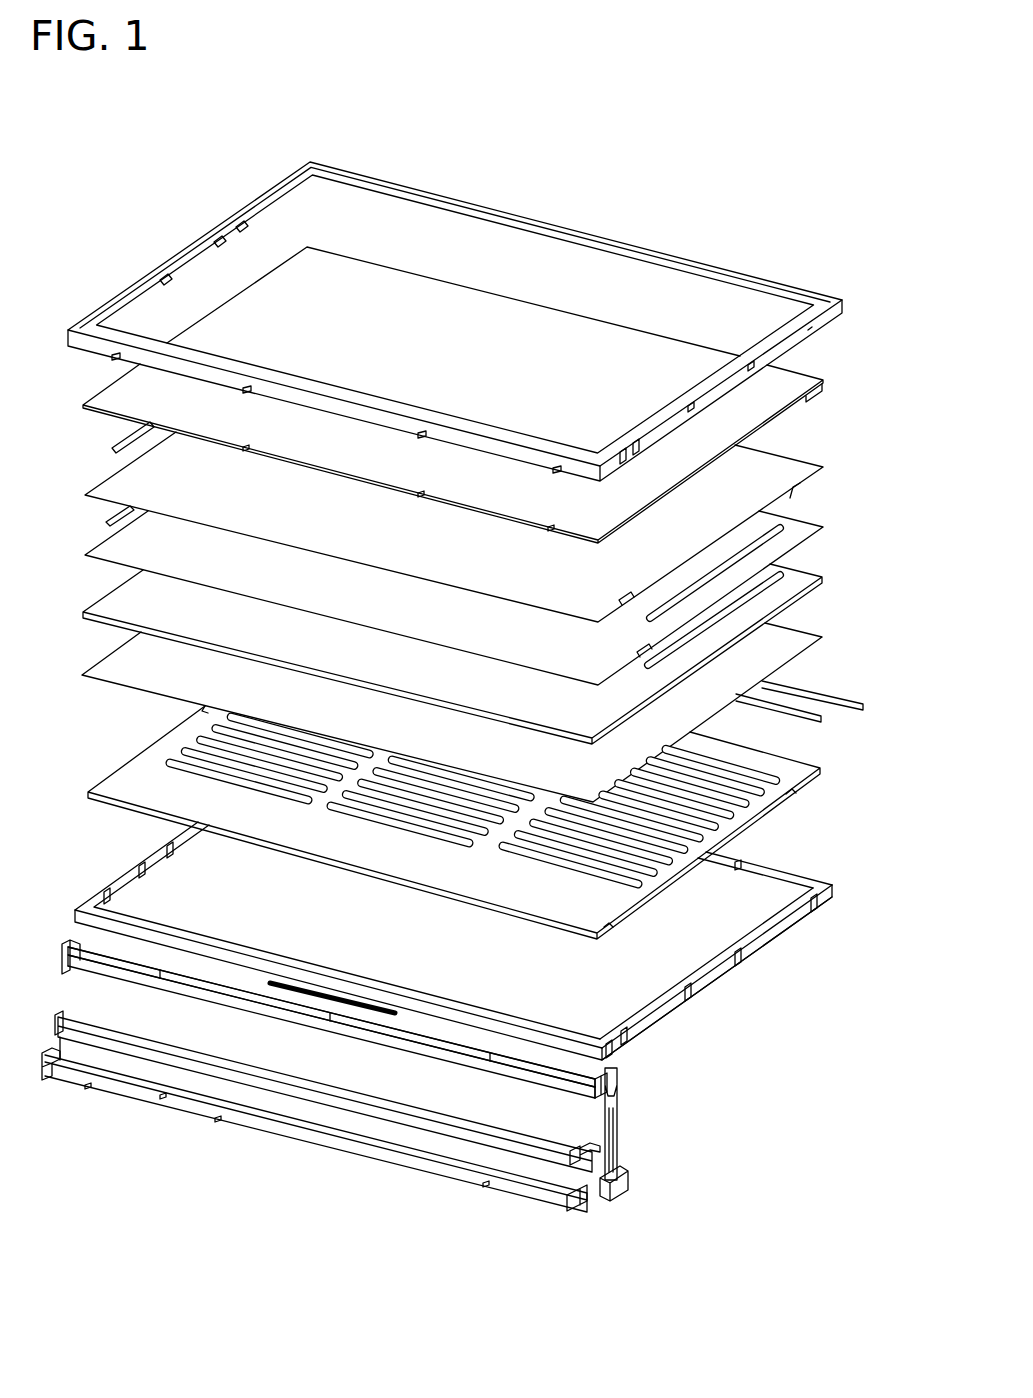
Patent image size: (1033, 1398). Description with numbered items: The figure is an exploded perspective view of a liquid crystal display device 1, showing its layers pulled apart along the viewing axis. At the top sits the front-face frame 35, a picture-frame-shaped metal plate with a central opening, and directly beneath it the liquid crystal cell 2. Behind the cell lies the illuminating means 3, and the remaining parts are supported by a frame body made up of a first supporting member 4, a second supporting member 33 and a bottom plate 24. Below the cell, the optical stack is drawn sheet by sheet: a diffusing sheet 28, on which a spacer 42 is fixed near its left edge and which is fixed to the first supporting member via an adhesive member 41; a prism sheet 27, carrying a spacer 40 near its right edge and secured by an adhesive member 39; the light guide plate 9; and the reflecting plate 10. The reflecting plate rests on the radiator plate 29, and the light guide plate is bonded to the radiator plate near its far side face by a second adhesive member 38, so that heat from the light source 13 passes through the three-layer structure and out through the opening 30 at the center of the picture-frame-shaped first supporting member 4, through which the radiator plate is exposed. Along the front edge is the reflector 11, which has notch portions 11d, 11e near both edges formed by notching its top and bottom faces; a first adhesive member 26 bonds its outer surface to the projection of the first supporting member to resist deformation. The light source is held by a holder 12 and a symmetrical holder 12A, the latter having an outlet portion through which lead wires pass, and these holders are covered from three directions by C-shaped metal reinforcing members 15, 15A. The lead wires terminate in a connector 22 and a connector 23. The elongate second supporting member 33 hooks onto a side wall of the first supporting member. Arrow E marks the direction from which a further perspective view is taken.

The liquid crystal display device 1 is at (608, 221).
The liquid crystal cell 2 is at (400, 301).
The illuminating means 3 is at (627, 1076).
The first supporting member 4 is at (130, 888).
The light guide plate 9 is at (285, 625).
The reflecting plate 10 is at (157, 644).
The reflector 11 is at (317, 1098).
The notch portion 11d is at (572, 1165).
The notch portion 11e is at (55, 1082).
The holder 12 is at (62, 968).
The holder 12A is at (578, 1084).
The light source 13 is at (213, 976).
The reinforcing member 15 is at (118, 957).
The reinforcing member 15A is at (590, 1096).
The connector 22 is at (622, 1168).
The connector 23 is at (608, 1200).
The bottom plate 24 is at (350, 1158).
The first adhesive member 26 is at (317, 982).
The prism sheet 27 is at (255, 557).
The diffusing sheet 28 is at (215, 462).
The radiator plate 29 is at (130, 778).
The opening 30 is at (669, 980).
The second supporting member 33 is at (800, 686).
The front-face frame 35 is at (231, 212).
The second adhesive member 38 is at (760, 708).
The adhesive member 39 is at (643, 655).
The spacer 40 is at (687, 588).
The adhesive member 41 is at (121, 518).
The spacer 42 is at (128, 436).
The arrow E is at (588, 1068).